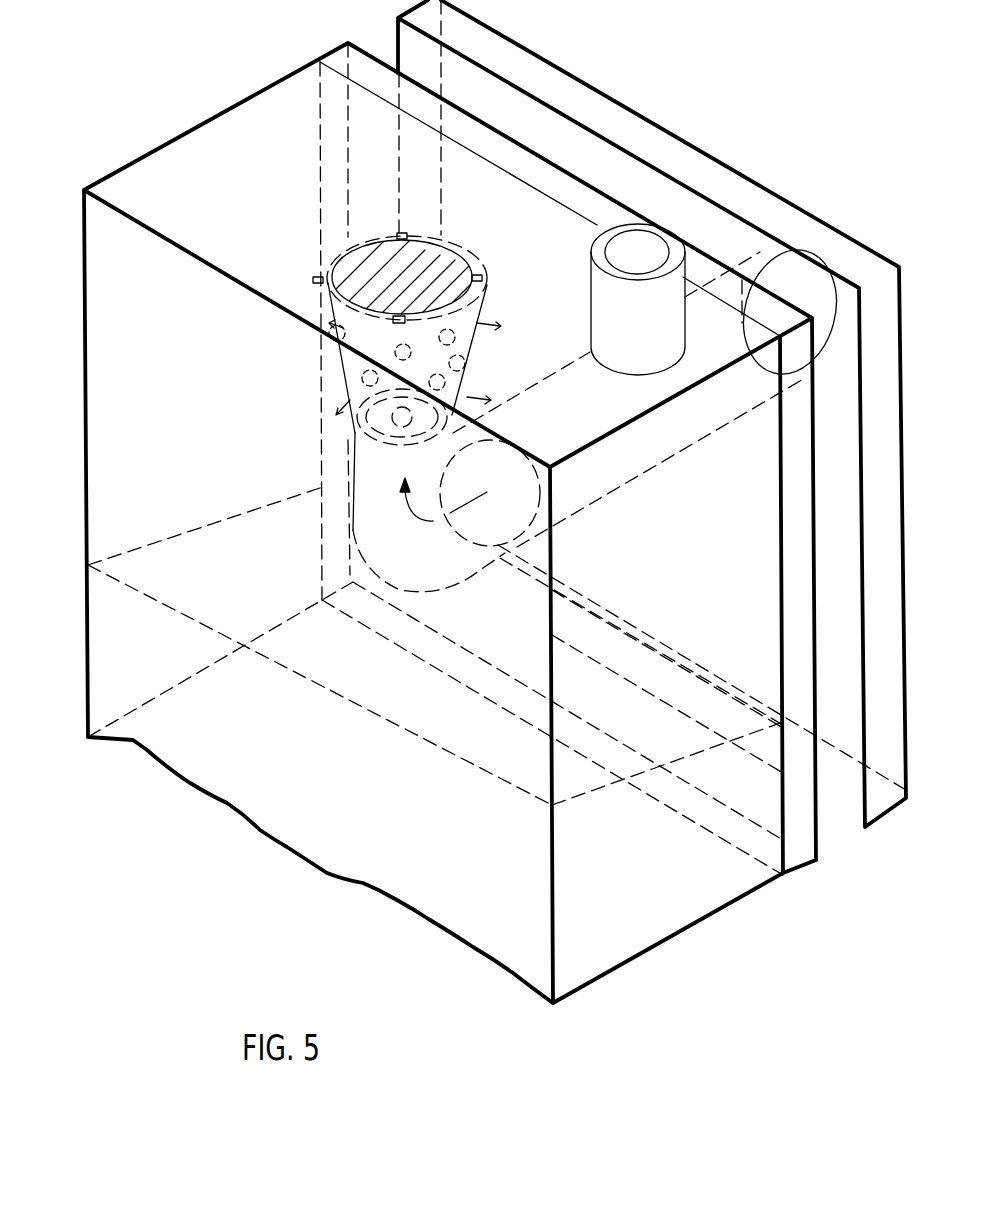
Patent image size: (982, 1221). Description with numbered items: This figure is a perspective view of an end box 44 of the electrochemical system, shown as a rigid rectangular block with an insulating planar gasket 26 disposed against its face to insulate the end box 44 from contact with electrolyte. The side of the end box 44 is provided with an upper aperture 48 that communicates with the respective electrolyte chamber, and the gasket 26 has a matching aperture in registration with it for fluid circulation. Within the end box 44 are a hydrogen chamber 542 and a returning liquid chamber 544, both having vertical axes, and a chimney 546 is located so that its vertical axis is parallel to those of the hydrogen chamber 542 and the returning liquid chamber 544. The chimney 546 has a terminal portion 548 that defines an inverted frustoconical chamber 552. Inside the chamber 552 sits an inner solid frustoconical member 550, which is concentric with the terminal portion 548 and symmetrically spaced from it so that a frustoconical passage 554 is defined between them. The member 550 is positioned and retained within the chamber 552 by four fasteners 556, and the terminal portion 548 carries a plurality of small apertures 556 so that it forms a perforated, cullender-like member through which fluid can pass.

The insulating planar gasket 26 is at (729, 178).
The end box 44 is at (86, 404).
The upper aperture 48 is at (317, 263).
The hydrogen chamber 542 is at (233, 446).
The returning liquid chamber 544 is at (350, 781).
The chimney 546 is at (380, 580).
The terminal portion 548 is at (333, 372).
The inner solid frustoconical member 550 is at (455, 262).
The inverted frustoconical chamber 552 is at (377, 233).
The frustoconical passage 554 is at (347, 247).
The fasteners 556 is at (316, 281).